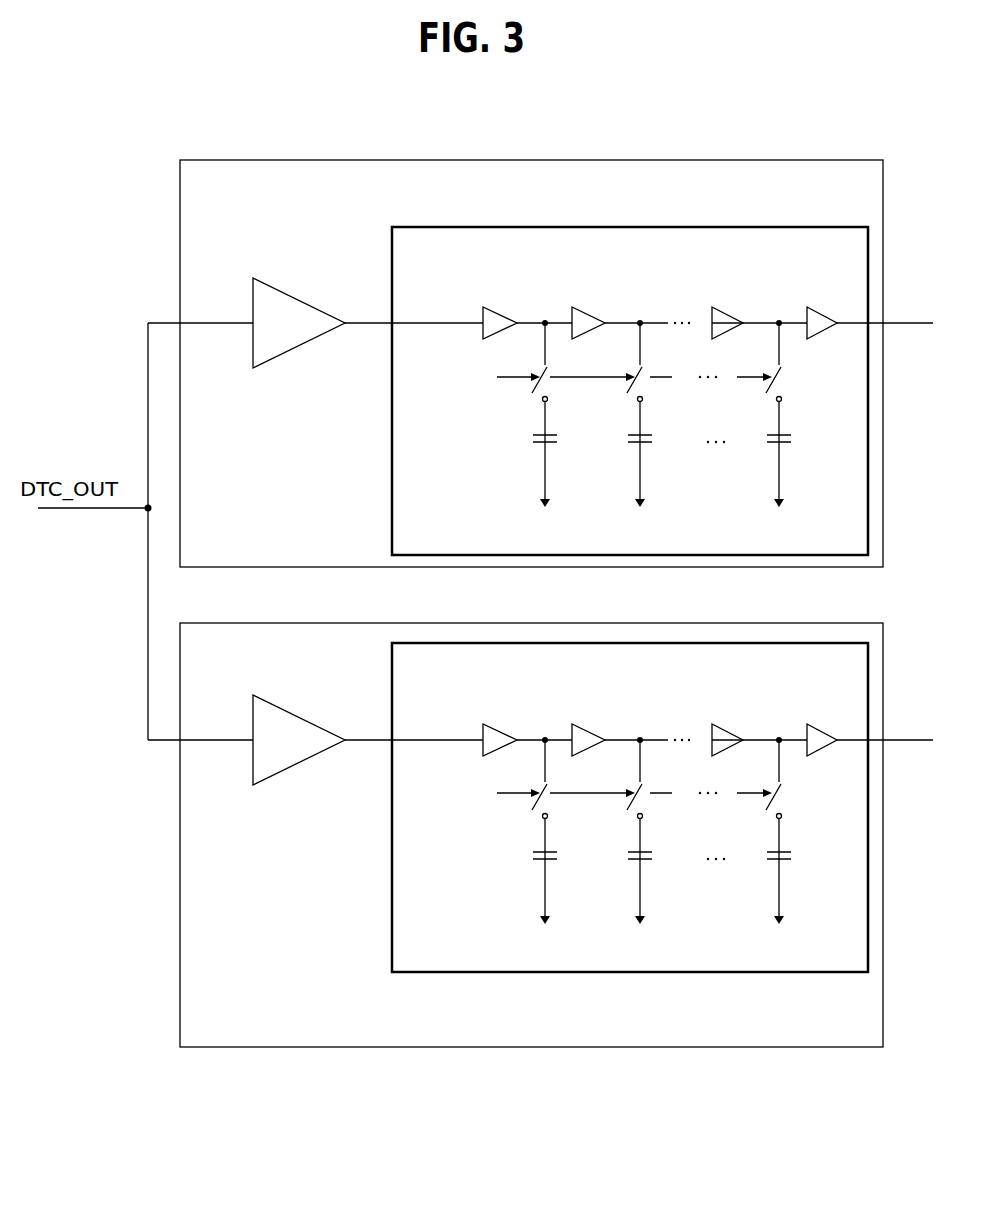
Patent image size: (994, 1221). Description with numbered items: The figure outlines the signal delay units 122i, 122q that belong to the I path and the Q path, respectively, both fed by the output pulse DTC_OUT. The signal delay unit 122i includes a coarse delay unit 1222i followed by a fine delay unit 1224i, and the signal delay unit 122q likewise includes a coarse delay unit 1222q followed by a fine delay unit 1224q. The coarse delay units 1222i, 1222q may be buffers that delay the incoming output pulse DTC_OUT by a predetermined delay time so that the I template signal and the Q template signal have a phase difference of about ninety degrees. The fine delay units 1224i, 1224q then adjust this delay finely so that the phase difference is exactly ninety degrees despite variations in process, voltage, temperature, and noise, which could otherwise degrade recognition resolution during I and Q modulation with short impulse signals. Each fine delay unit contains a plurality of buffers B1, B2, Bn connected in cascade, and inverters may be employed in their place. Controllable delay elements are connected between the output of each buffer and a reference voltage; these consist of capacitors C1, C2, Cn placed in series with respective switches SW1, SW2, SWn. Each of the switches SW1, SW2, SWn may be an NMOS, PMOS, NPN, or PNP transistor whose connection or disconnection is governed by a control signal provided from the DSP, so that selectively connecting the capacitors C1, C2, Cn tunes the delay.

The signal delay unit 122i is at (540, 363).
The signal delay unit 122q is at (540, 835).
The coarse delay unit 1222i is at (312, 347).
The coarse delay unit 1222q is at (300, 765).
The fine delay unit 1224i is at (630, 391).
The fine delay unit 1224q is at (630, 807).
The buffer B1 is at (508, 311).
The buffer B2 is at (599, 311).
The buffer Bn is at (734, 311).
The switch SW1 is at (563, 571).
The switch SW2 is at (658, 571).
The switch SWn is at (797, 571).
The capacitor C1 is at (560, 662).
The capacitor C2 is at (655, 662).
The capacitor Cn is at (794, 662).